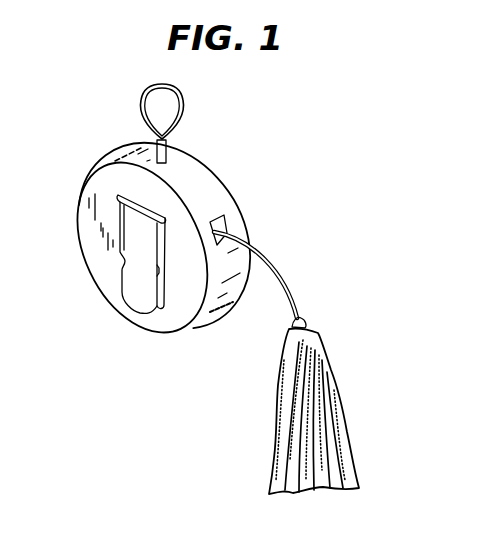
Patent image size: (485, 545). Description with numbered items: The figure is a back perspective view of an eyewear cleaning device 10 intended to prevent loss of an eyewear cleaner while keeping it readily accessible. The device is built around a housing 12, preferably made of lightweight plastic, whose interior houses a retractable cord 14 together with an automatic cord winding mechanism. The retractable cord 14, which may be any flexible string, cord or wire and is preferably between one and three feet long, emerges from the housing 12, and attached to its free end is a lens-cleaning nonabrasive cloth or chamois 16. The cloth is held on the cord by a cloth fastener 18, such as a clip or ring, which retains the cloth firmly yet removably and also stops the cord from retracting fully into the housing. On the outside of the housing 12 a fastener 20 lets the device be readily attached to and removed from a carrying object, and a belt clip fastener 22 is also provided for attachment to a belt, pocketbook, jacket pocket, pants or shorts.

The eyewear cleaning device 10 is at (272, 146).
The housing 12 is at (101, 291).
The retractable cord 14 is at (278, 263).
The lens-cleaning nonabrasive cloth or chamois 16 is at (349, 422).
The cloth fastener 18 is at (305, 320).
The fastener 20 is at (184, 110).
The belt clip fastener 22 is at (137, 228).